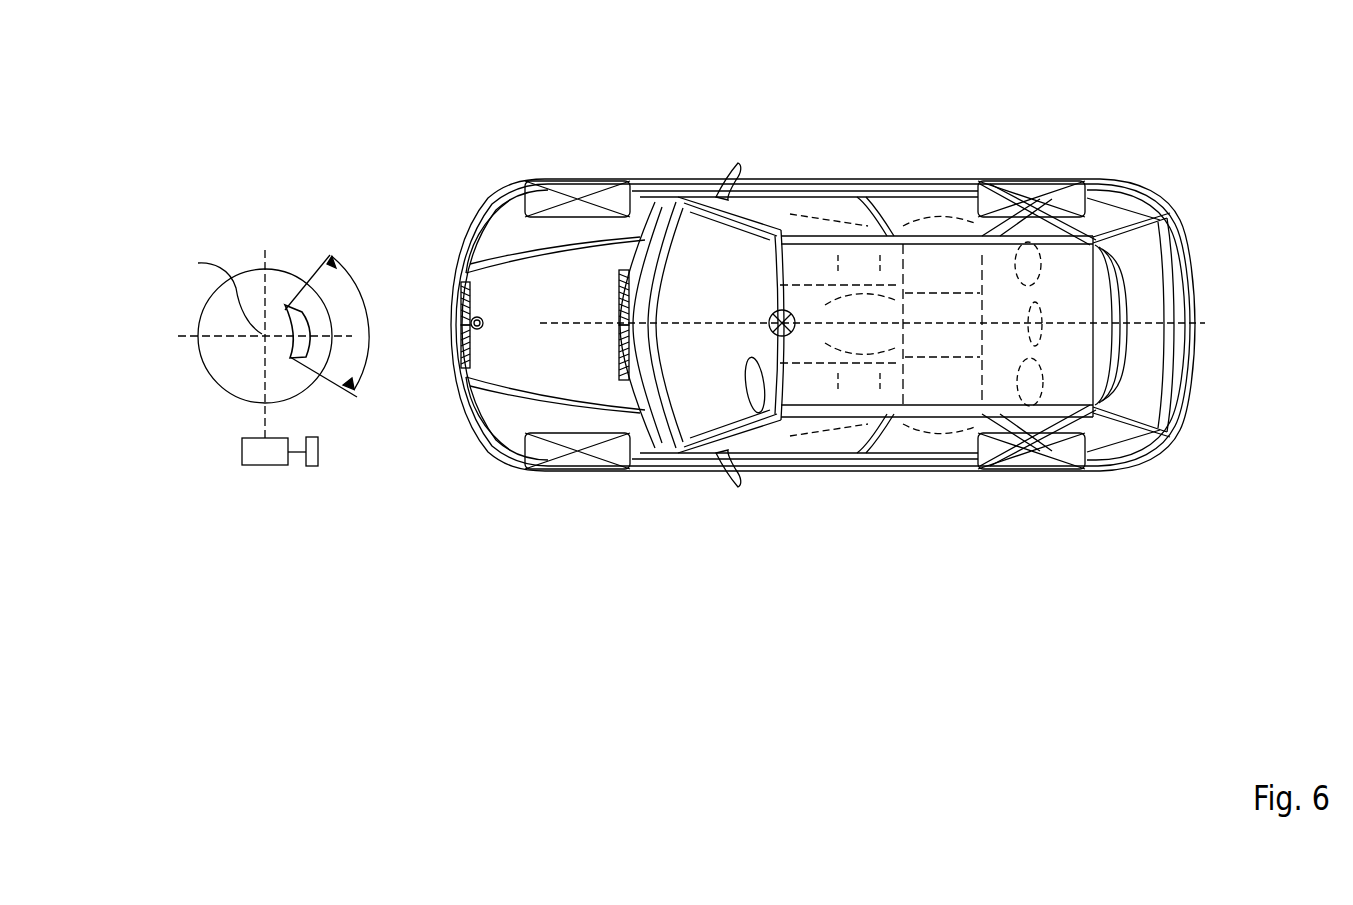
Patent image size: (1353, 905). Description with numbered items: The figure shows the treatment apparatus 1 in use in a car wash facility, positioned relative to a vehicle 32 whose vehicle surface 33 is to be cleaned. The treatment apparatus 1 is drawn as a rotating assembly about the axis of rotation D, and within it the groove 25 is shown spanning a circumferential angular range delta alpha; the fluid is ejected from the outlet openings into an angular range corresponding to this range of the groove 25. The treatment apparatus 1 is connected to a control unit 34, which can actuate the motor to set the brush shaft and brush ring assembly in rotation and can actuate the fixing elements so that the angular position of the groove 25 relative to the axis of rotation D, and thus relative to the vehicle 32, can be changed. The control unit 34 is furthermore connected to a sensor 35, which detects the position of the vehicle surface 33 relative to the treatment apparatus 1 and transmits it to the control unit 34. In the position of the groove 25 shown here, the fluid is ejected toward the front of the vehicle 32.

The treatment apparatus 1 is at (277, 301).
The groove 25 is at (296, 325).
The vehicle 32 is at (899, 309).
The vehicle surface 33 is at (912, 472).
The control unit 34 is at (265, 452).
The sensor 35 is at (313, 466).